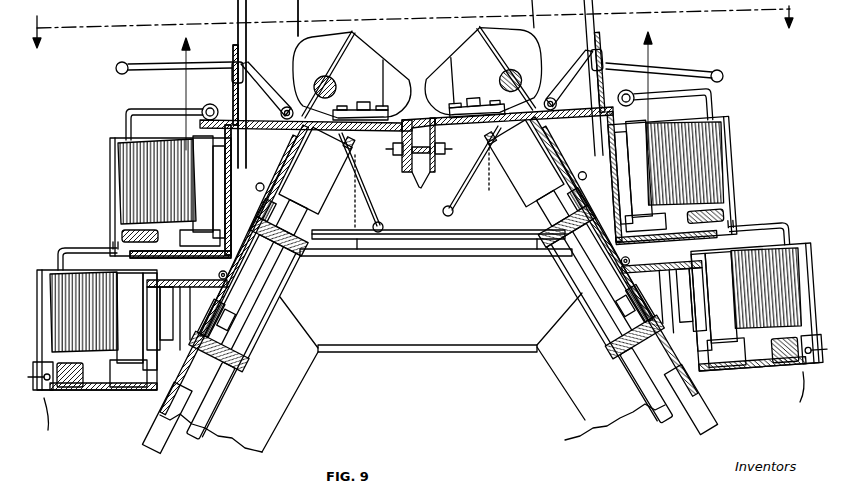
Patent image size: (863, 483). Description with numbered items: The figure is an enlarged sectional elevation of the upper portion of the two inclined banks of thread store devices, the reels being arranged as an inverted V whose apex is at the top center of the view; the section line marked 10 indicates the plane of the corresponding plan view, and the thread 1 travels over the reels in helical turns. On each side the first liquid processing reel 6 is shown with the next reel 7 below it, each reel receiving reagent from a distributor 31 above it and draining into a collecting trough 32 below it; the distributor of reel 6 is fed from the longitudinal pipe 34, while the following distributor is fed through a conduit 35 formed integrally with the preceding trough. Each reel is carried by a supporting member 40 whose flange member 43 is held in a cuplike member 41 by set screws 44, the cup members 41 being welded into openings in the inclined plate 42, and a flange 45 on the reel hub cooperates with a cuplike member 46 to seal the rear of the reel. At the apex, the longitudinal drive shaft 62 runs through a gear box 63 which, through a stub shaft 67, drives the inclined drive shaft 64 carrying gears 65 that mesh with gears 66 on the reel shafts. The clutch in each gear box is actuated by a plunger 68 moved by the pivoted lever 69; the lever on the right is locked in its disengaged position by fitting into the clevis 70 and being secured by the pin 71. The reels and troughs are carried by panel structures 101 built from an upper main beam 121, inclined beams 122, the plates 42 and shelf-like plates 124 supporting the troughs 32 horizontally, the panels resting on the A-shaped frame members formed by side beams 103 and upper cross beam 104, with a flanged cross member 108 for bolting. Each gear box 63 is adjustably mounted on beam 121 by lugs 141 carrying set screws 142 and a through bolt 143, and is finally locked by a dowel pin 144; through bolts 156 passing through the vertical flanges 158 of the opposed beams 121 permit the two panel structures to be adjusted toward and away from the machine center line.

The thread 1 is at (180, 42).
The first liquid processing reel 6 is at (122, 165).
The thread store device 7 is at (47, 270).
The thread store device 10 is at (409, 41).
The reagent distributor 31 is at (135, 112).
The collecting trough 32 is at (110, 142).
The pipe 34 is at (213, 104).
The conduit 35 is at (128, 231).
The supporting member 40 is at (165, 300).
The cuplike member 41 is at (270, 126).
The inclined plate 42 is at (280, 296).
The flange member 43 is at (207, 345).
The set screw 44 is at (282, 222).
The flange 45 is at (158, 303).
The cuplike member 46 is at (242, 245).
The drive shaft 62 is at (323, 76).
The gear box 63 is at (455, 50).
The inclined drive shaft 64 is at (208, 405).
The gear 65 is at (312, 230).
The gear 66 is at (230, 320).
The stub shaft 67 is at (352, 148).
The plunger 68 is at (330, 165).
The lever 69 is at (121, 62).
The clevis 70 is at (350, 165).
The pin 71 is at (358, 245).
The panel structure 101 is at (166, 422).
The side beam 103 is at (265, 437).
The upper cross beam 104 is at (415, 345).
The flanged cross member 108 is at (455, 255).
The upper main beam 121 is at (268, 90).
The inclined beam 122 is at (186, 420).
The shelf-like plate 124 is at (152, 396).
The lug 141 is at (395, 82).
The set screw 142 is at (342, 108).
The through bolt 143 is at (372, 94).
The dowel pin 144 is at (492, 103).
The through bolt 156 is at (412, 140).
The vertical flange 158 is at (419, 188).